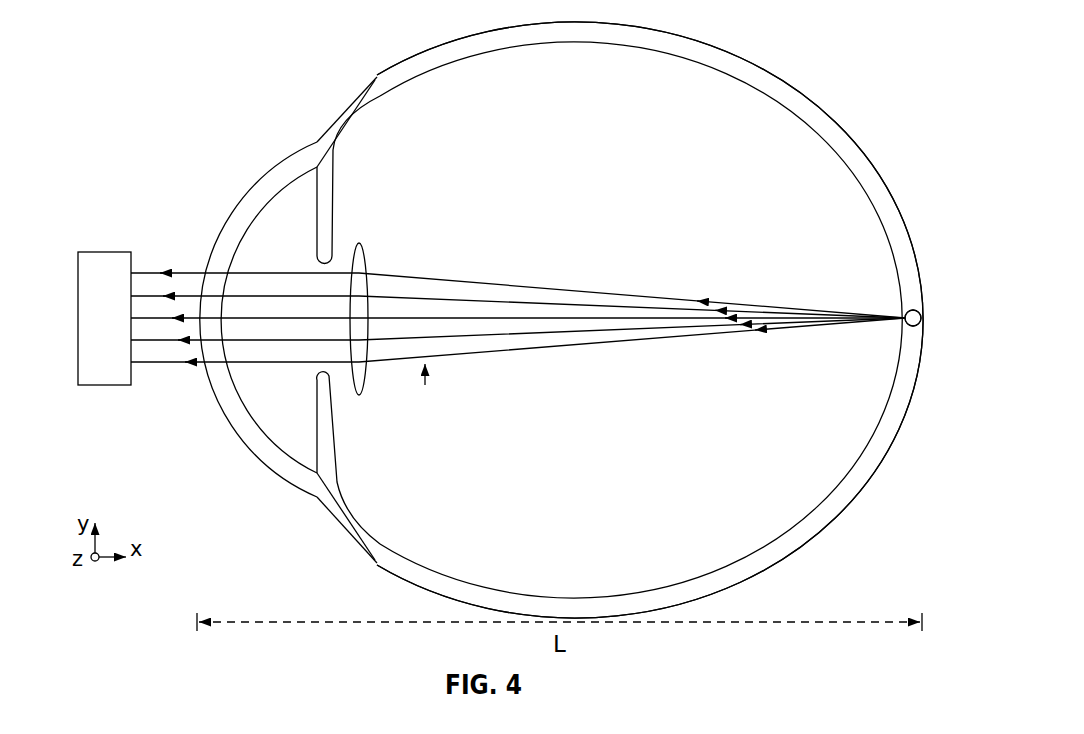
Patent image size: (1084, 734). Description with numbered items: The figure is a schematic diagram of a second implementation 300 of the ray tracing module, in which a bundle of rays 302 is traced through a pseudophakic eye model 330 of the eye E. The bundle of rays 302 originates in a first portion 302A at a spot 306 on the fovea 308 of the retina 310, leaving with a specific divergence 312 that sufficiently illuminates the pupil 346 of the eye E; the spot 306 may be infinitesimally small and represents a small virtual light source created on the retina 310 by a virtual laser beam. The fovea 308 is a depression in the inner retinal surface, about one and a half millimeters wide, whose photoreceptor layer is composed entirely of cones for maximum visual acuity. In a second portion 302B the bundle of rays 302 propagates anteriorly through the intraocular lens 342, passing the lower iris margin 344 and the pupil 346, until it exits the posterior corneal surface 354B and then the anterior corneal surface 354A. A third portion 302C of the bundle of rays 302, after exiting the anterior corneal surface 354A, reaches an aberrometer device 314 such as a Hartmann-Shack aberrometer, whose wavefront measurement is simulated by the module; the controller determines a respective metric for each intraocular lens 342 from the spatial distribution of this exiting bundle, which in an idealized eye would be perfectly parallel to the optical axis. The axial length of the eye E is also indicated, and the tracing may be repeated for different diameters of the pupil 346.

The second implementation 300 is at (163, 73).
The pseudophakic eye model 330 is at (838, 66).
The eye E is at (866, 124).
The retina 310 is at (896, 410).
The anterior corneal surface 354A is at (236, 436).
The posterior corneal surface 354B is at (290, 462).
The pupil 346 is at (337, 258).
The lower iris 344 is at (334, 436).
The intraocular lens 342 is at (365, 378).
The aberrometer device 314 is at (100, 387).
The bundle of rays 302 is at (166, 374).
The third portion of the bundle of rays 302C is at (193, 267).
The second portion of the bundle of rays 302B is at (522, 288).
The first portion of the bundle of rays 302A is at (893, 306).
The spot 306 is at (916, 298).
The fovea 308 is at (916, 338).
The divergence 312 is at (426, 268).